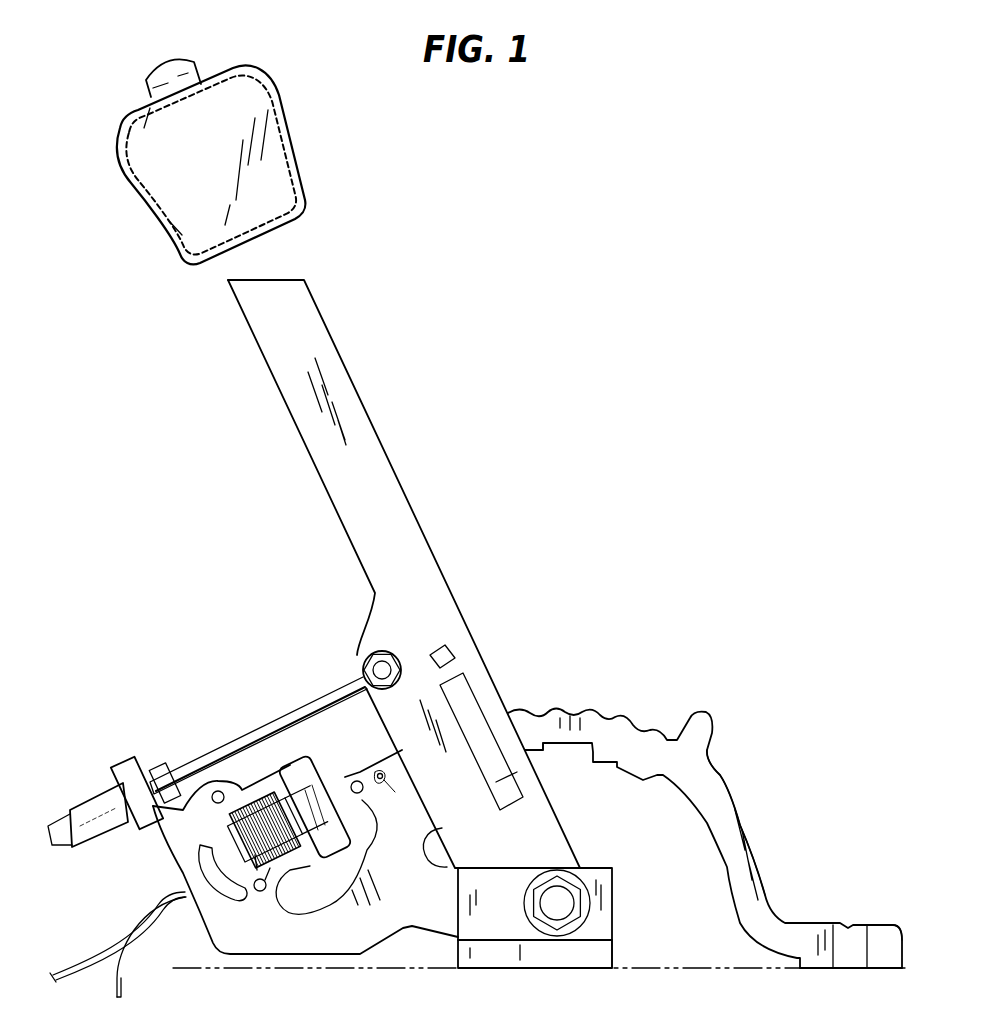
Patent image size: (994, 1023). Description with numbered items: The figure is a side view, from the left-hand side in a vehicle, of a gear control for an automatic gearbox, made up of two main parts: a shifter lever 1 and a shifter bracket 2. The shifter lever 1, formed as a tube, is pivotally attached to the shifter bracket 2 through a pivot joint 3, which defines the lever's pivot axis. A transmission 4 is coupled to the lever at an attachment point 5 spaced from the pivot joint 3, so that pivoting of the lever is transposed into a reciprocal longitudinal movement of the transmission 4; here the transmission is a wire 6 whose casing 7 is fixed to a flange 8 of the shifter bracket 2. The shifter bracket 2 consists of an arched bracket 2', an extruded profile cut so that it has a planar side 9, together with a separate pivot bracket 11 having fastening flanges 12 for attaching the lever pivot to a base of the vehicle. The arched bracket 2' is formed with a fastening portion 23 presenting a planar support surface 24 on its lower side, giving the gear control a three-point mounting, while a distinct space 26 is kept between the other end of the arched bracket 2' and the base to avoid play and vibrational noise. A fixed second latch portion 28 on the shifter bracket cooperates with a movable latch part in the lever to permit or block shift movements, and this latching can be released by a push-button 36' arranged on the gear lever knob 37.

The shifter lever 1 is at (346, 376).
The shifter bracket 2 is at (705, 833).
The arched bracket 2' is at (779, 838).
The pivot joint 3 is at (610, 906).
The transmission 4 is at (232, 740).
The attachment point 5 is at (362, 662).
The wire 6 is at (212, 757).
The casing 7 is at (86, 807).
The flange 8 is at (140, 757).
The planar side 9 is at (723, 800).
The pivot bracket 11 is at (610, 955).
The fastening flange 12 is at (500, 958).
The fastening portion 23 is at (885, 932).
The support surface 24 is at (880, 971).
The space 26 is at (280, 954).
The second latch portion 28 is at (560, 746).
The push-button 36' is at (187, 48).
The gear lever knob 37 is at (272, 160).